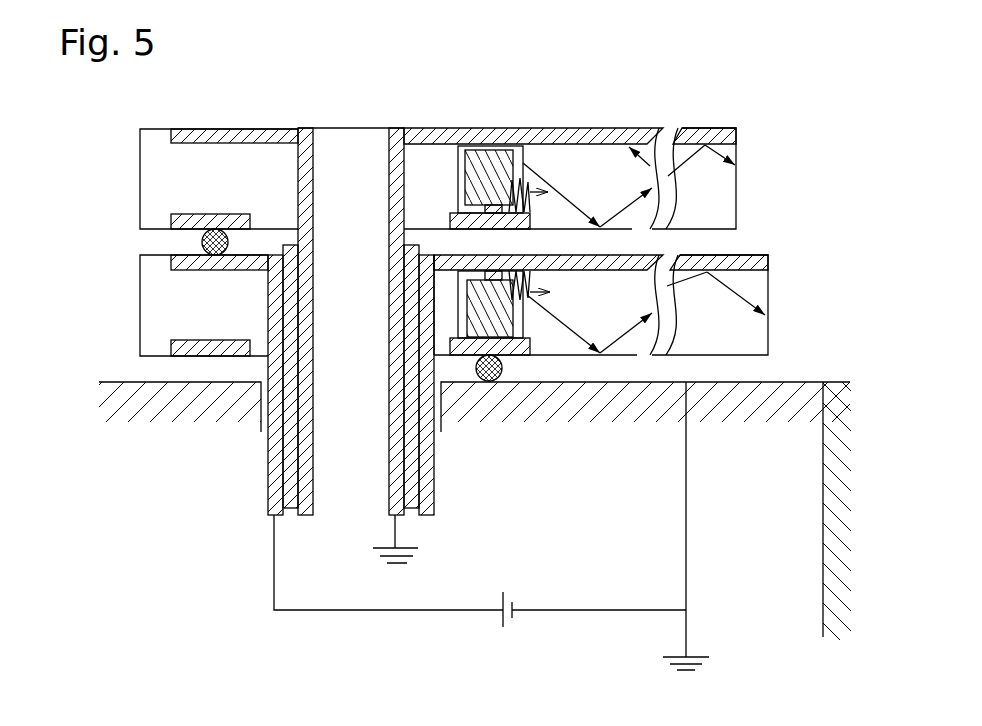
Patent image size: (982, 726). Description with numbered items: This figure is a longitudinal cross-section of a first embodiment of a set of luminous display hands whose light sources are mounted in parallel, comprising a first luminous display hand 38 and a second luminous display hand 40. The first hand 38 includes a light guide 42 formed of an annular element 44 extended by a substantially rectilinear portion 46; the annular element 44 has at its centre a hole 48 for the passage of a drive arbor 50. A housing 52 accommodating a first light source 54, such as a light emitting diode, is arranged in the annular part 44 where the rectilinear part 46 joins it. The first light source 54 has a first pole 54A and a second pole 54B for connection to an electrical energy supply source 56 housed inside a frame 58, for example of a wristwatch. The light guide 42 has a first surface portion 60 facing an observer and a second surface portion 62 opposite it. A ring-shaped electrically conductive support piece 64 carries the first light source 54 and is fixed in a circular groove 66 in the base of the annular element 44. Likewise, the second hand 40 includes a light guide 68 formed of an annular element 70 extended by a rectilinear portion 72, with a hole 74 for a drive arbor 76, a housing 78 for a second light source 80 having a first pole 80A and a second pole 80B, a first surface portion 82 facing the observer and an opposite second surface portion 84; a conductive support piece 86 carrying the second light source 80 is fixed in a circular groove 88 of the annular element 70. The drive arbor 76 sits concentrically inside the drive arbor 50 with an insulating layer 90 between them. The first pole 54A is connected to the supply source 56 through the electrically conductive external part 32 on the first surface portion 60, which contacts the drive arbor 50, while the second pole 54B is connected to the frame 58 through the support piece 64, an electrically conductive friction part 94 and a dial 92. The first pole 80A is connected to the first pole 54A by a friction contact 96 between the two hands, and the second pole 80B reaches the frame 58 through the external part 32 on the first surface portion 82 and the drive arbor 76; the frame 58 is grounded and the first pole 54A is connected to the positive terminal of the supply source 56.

The electrically conductive external part 32 is at (727, 140).
The first luminous display hand 38 is at (703, 314).
The second luminous display hand 40 is at (587, 197).
The light guide 42 is at (137, 313).
The annular element 44 is at (157, 348).
The rectilinear portion 46 is at (713, 348).
The hole 48 is at (268, 435).
The drive arbor 50 is at (275, 483).
The housing 52 is at (463, 312).
The first light source 54 is at (518, 325).
The first pole 54A is at (508, 244).
The second pole 54B is at (467, 357).
The electrical energy supply source 56 is at (497, 620).
The frame 58 is at (827, 600).
The first surface portion 60 is at (620, 272).
The second surface portion 62 is at (743, 357).
The electrically conductive support piece 64 is at (207, 347).
The circular groove 66 is at (187, 337).
The light guide 68 is at (137, 165).
The annular element 70 is at (153, 150).
The rectilinear portion 72 is at (718, 175).
The hole 74 is at (352, 203).
The drive arbor 76 is at (300, 515).
The housing 78 is at (462, 150).
The second light source 80 is at (475, 177).
The first pole 80A is at (487, 203).
The second pole 80B is at (490, 147).
The first surface portion 82 is at (660, 150).
The second surface portion 84 is at (708, 230).
The electrically conductive support piece 86 is at (210, 223).
The circular groove 88 is at (180, 213).
The insulating layer 90 is at (272, 497).
The dial 92 is at (108, 388).
The electrically conductive friction part 94 is at (492, 373).
The friction contact 96 is at (235, 228).